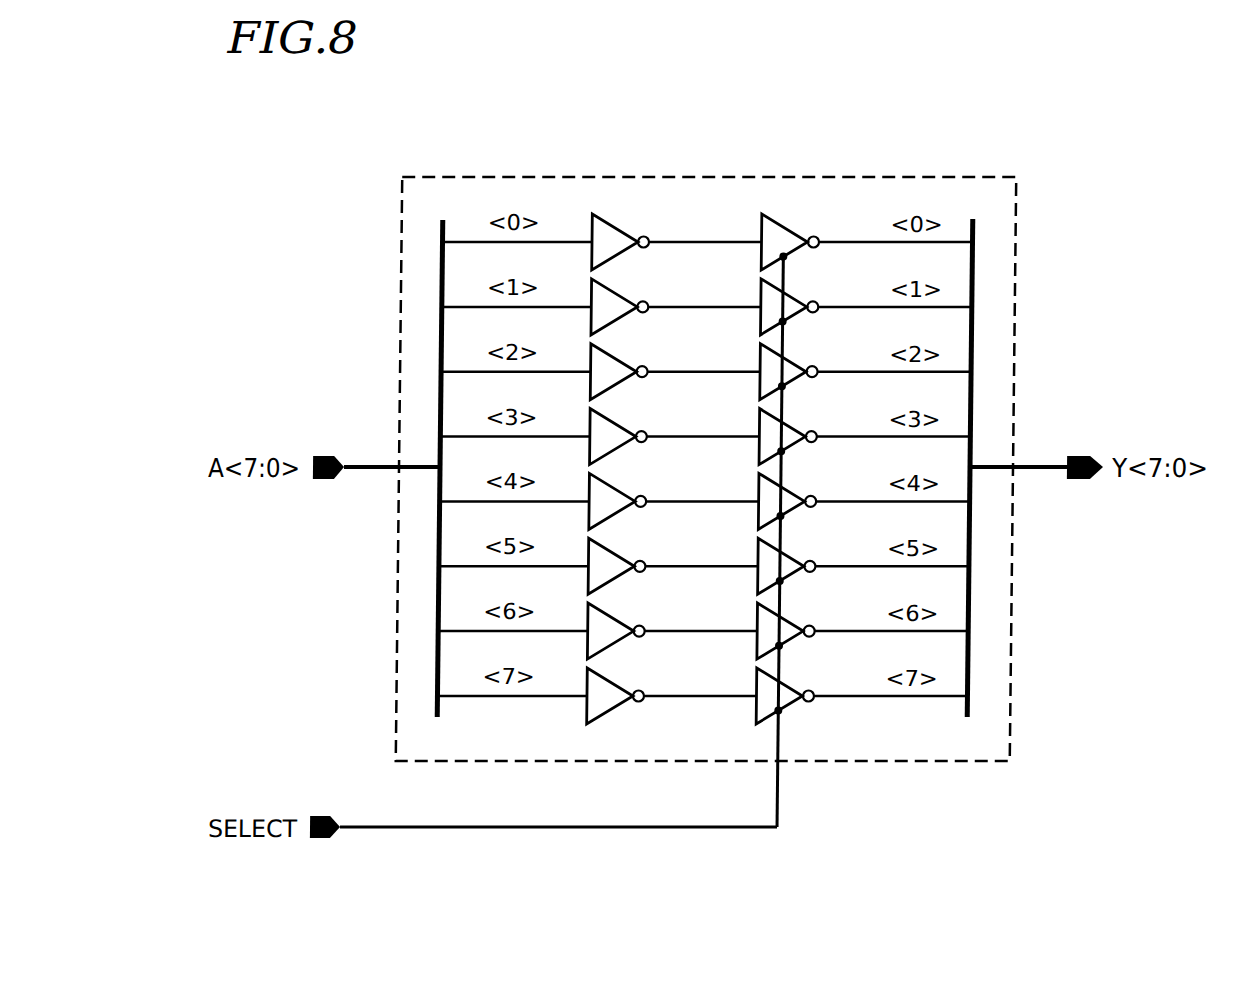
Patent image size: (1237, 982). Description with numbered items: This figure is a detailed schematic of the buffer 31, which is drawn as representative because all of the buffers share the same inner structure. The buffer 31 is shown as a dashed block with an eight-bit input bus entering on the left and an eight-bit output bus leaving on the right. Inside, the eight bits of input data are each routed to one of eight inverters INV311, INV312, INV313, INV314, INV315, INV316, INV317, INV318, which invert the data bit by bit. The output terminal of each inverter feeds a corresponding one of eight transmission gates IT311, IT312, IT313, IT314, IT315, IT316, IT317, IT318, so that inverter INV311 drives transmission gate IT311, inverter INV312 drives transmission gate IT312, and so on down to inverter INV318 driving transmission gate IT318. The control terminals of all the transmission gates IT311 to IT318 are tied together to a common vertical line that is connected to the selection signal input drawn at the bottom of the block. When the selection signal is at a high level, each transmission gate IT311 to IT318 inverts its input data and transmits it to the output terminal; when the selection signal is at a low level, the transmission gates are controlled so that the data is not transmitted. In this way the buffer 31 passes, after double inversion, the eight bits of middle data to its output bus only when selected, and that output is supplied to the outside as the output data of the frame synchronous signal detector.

The buffer 31 is at (702, 177).
The inverter INV311 is at (575, 236).
The inverter INV312 is at (574, 301).
The inverter INV313 is at (574, 366).
The inverter INV314 is at (573, 431).
The inverter INV315 is at (572, 495).
The inverter INV316 is at (572, 560).
The inverter INV317 is at (571, 625).
The inverter INV318 is at (570, 690).
The transmission gate IT311 is at (811, 236).
The transmission gate IT312 is at (810, 301).
The transmission gate IT313 is at (809, 366).
The transmission gate IT314 is at (809, 431).
The transmission gate IT315 is at (808, 495).
The transmission gate IT316 is at (807, 560).
The transmission gate IT317 is at (806, 625).
The transmission gate IT318 is at (806, 690).